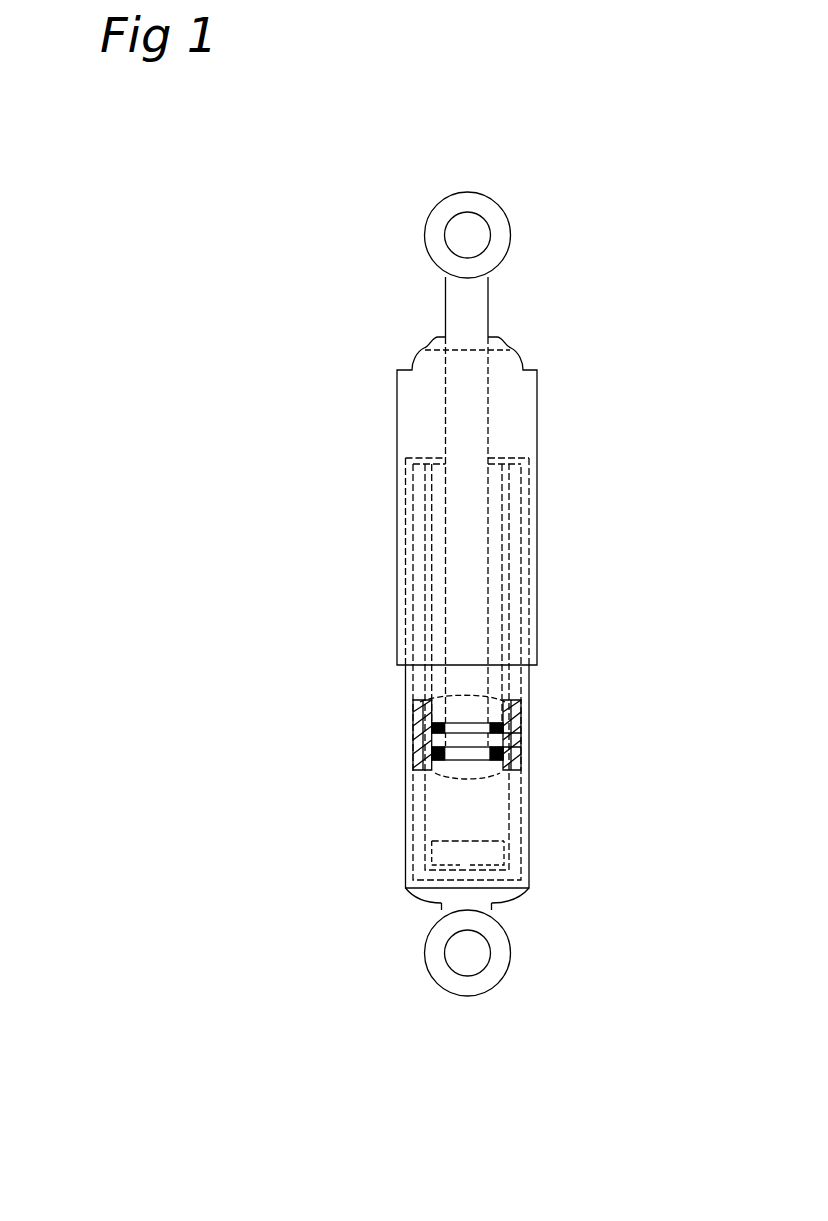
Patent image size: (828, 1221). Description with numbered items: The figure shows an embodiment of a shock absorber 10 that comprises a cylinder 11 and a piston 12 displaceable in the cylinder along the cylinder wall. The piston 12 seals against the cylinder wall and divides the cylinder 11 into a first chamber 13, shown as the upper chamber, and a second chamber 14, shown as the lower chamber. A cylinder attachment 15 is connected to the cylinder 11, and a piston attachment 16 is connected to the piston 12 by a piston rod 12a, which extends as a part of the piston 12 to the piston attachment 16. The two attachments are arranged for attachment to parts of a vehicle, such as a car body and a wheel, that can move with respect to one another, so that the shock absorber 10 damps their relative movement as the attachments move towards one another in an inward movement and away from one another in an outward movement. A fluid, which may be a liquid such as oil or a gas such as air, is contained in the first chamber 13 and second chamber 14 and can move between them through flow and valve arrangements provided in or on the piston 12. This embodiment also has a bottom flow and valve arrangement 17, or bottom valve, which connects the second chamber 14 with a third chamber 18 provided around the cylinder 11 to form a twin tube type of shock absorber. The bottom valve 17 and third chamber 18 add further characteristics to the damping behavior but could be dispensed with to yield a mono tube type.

The shock absorber 10 is at (492, 594).
The cylinder 11 is at (425, 722).
The piston 12 is at (432, 748).
The piston rod 12a is at (457, 430).
The first chamber 13 is at (494, 568).
The second chamber 14 is at (490, 813).
The cylinder attachment 15 is at (492, 972).
The piston attachment 16 is at (497, 223).
The bottom flow and valve arrangement 17 is at (490, 852).
The third chamber 18 is at (517, 736).